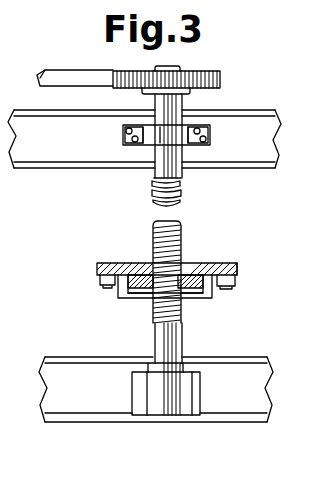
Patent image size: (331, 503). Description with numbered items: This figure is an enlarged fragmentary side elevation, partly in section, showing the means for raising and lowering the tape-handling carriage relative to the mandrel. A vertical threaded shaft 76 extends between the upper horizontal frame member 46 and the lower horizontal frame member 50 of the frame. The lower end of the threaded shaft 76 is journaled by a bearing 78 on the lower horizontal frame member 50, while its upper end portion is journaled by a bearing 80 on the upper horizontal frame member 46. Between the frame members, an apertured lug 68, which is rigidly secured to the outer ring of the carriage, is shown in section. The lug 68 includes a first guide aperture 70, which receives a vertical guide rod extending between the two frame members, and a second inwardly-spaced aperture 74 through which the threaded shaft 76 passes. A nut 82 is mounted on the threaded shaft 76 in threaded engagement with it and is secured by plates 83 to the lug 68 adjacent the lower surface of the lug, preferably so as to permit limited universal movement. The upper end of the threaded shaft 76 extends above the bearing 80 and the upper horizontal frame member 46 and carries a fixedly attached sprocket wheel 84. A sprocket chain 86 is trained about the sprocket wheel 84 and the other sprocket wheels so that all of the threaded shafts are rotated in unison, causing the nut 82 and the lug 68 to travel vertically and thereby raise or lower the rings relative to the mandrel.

The upper horizontal frame member 46 is at (82, 154).
The lower horizontal frame member 50 is at (252, 395).
The apertured lug 68 is at (136, 263).
The first guide aperture 70 is at (237, 270).
The second inwardly-spaced aperture 74 is at (179, 266).
The threaded shaft 76 is at (181, 178).
The bearing 78 is at (197, 402).
The bearing 80 is at (185, 127).
The nut 82 is at (199, 300).
The plates 83 is at (150, 298).
The sprocket wheel 84 is at (208, 76).
The sprocket chain 86 is at (88, 75).